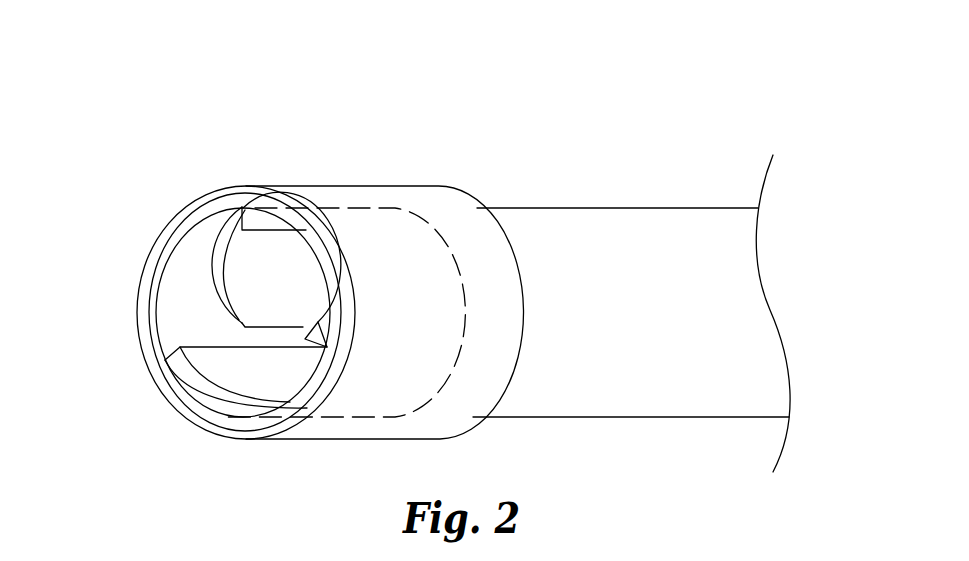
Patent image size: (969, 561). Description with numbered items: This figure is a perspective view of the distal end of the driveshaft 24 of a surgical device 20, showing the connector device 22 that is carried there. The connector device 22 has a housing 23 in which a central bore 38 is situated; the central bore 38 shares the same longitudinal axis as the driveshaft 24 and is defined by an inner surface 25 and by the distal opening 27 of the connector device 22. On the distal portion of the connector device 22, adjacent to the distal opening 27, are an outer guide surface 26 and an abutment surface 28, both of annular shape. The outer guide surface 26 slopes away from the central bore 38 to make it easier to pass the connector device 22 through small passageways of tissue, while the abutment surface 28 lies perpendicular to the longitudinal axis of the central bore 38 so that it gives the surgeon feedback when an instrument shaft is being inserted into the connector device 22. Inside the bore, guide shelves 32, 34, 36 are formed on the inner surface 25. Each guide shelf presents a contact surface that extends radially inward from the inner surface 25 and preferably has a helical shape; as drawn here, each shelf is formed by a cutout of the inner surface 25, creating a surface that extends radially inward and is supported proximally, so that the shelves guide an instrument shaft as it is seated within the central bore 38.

The surgical device 20 is at (572, 133).
The connector device 22 is at (427, 185).
The housing 23 is at (367, 430).
The driveshaft 24 is at (683, 222).
The inner surface 25 is at (190, 257).
The outer guide surface 26 is at (323, 393).
The distal opening 27 is at (150, 327).
The abutment surface 28 is at (158, 245).
The guide shelf 32 is at (203, 388).
The guide shelf 34 is at (228, 230).
The guide shelf 36 is at (322, 324).
The central bore 38 is at (193, 293).